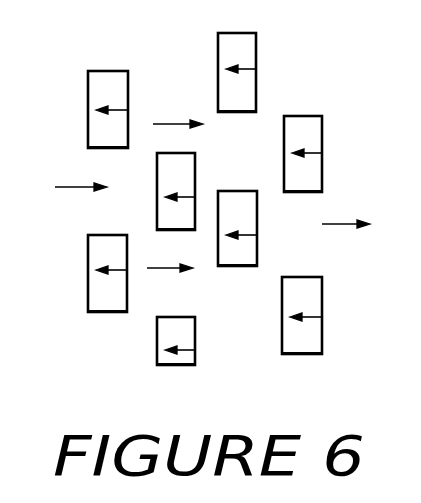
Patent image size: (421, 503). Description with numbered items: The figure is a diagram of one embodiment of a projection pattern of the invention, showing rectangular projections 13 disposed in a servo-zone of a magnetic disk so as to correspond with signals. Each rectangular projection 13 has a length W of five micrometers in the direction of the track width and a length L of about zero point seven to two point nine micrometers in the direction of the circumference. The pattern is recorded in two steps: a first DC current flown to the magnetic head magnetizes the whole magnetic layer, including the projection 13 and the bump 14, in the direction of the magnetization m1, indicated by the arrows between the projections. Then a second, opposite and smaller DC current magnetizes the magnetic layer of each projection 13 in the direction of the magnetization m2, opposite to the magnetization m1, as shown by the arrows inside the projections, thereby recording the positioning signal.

The rectangular projection 13 is at (257, 38).
The bump 14 is at (172, 103).
The magnetization m1 is at (68, 187).
The magnetization m2 is at (120, 274).
The length in the direction of a circumference L is at (338, 97).
The length in the direction of a track width W is at (325, 116).